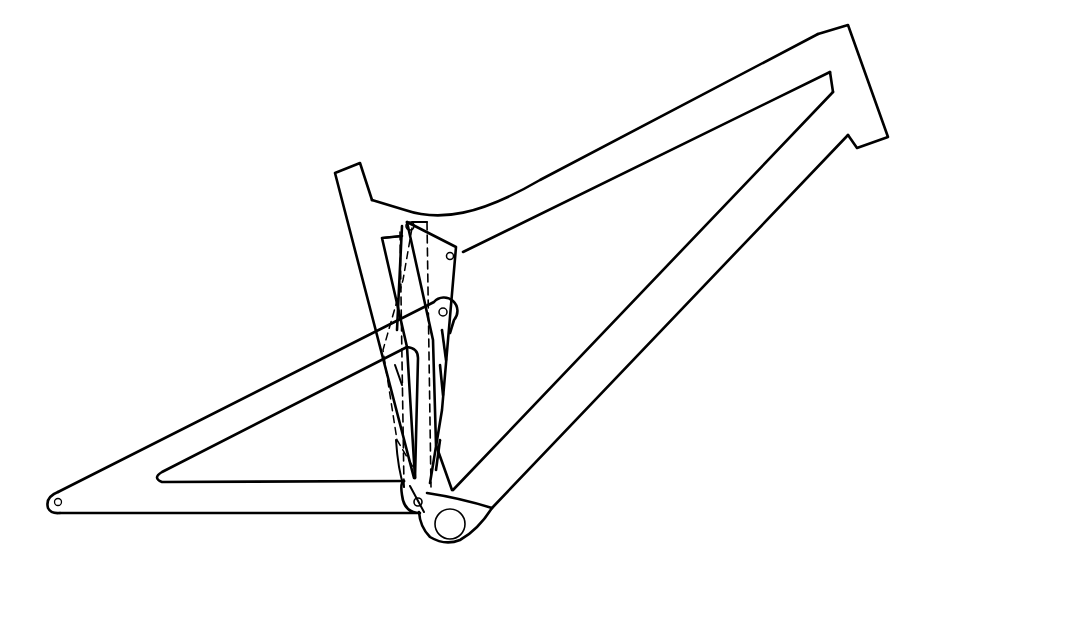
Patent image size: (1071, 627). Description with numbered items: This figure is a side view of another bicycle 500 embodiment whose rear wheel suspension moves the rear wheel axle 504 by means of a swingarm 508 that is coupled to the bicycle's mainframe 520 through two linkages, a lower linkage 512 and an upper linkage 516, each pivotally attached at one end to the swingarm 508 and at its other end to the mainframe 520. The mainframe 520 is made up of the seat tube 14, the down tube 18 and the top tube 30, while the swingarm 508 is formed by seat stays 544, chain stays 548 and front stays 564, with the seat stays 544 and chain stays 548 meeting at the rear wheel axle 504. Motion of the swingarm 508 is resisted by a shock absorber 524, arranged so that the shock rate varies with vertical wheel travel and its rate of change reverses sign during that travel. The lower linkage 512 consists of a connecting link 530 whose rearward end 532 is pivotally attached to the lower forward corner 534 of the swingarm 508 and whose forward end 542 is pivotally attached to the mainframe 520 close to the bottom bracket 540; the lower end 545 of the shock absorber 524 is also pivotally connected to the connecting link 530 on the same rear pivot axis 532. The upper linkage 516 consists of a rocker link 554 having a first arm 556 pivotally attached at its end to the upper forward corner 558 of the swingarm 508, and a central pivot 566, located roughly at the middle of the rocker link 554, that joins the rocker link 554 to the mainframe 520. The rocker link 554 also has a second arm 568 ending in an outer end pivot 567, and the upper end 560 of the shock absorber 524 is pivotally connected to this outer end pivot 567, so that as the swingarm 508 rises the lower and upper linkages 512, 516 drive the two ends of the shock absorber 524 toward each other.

The bicycle 500 is at (470, 156).
The rear wheel axle 504 is at (59, 496).
The swingarm 508 is at (240, 378).
The lower linkage 512 is at (418, 526).
The upper linkage 516 is at (332, 263).
The mainframe 520 is at (680, 72).
The shock absorber 524 is at (397, 298).
The connecting link 530 is at (483, 511).
The rearward end / rear pivot axis 532 is at (413, 511).
The lower forward corner 534 is at (394, 481).
The bottom bracket 540 is at (450, 538).
The forward end 542 is at (443, 468).
The seat stays 544 is at (219, 411).
The lower end 545 is at (411, 466).
The chain stays 548 is at (266, 502).
The rocker link 554 is at (462, 288).
The first arm 556 is at (461, 296).
The upper forward corner 558 is at (450, 338).
The front stays 564 is at (441, 372).
The central pivot 566 is at (463, 259).
The outer end pivot 567 is at (409, 220).
The second arm 568 is at (426, 220).
The upper end 560 is at (402, 228).
The seat tube 14 is at (397, 372).
The down tube 18 is at (636, 313).
The top tube 30 is at (615, 168).